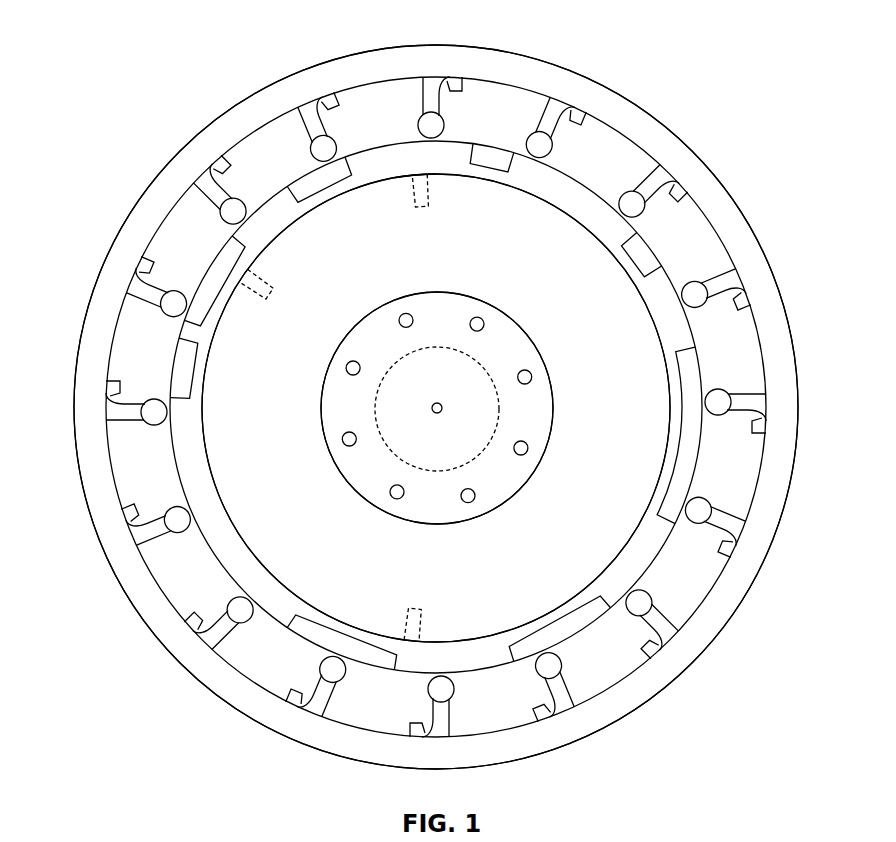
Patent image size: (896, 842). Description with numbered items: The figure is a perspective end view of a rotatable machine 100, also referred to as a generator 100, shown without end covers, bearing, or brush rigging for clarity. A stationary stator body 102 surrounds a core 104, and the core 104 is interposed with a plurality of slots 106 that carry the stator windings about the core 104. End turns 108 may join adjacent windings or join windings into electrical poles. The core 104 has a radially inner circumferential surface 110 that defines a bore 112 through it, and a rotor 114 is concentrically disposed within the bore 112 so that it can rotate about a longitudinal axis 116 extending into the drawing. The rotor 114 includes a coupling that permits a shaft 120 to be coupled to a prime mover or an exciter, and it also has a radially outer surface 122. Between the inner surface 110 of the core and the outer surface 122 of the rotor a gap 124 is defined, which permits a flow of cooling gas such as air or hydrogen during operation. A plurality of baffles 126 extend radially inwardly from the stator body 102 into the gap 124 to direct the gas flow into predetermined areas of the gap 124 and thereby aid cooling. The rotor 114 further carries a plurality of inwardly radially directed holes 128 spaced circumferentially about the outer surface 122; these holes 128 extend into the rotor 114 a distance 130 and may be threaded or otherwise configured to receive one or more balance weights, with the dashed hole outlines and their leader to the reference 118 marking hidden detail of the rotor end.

The rotatable machine 100 is at (104, 66).
The stator body 102 is at (777, 283).
The core 104 is at (700, 257).
The slots 106 is at (763, 427).
The end turns 108 is at (733, 523).
The radially inner circumferential surface 110 is at (570, 217).
The bore 112 is at (258, 232).
The rotor 114 is at (480, 574).
The longitudinal axis 116 is at (443, 409).
The hub plate 118 is at (437, 293).
The shaft 120 is at (481, 364).
The radially outer surface 122 is at (604, 202).
The gap 124 is at (396, 150).
The baffles 126 is at (304, 166).
The holes 128 is at (270, 300).
The distance 130 is at (412, 180).